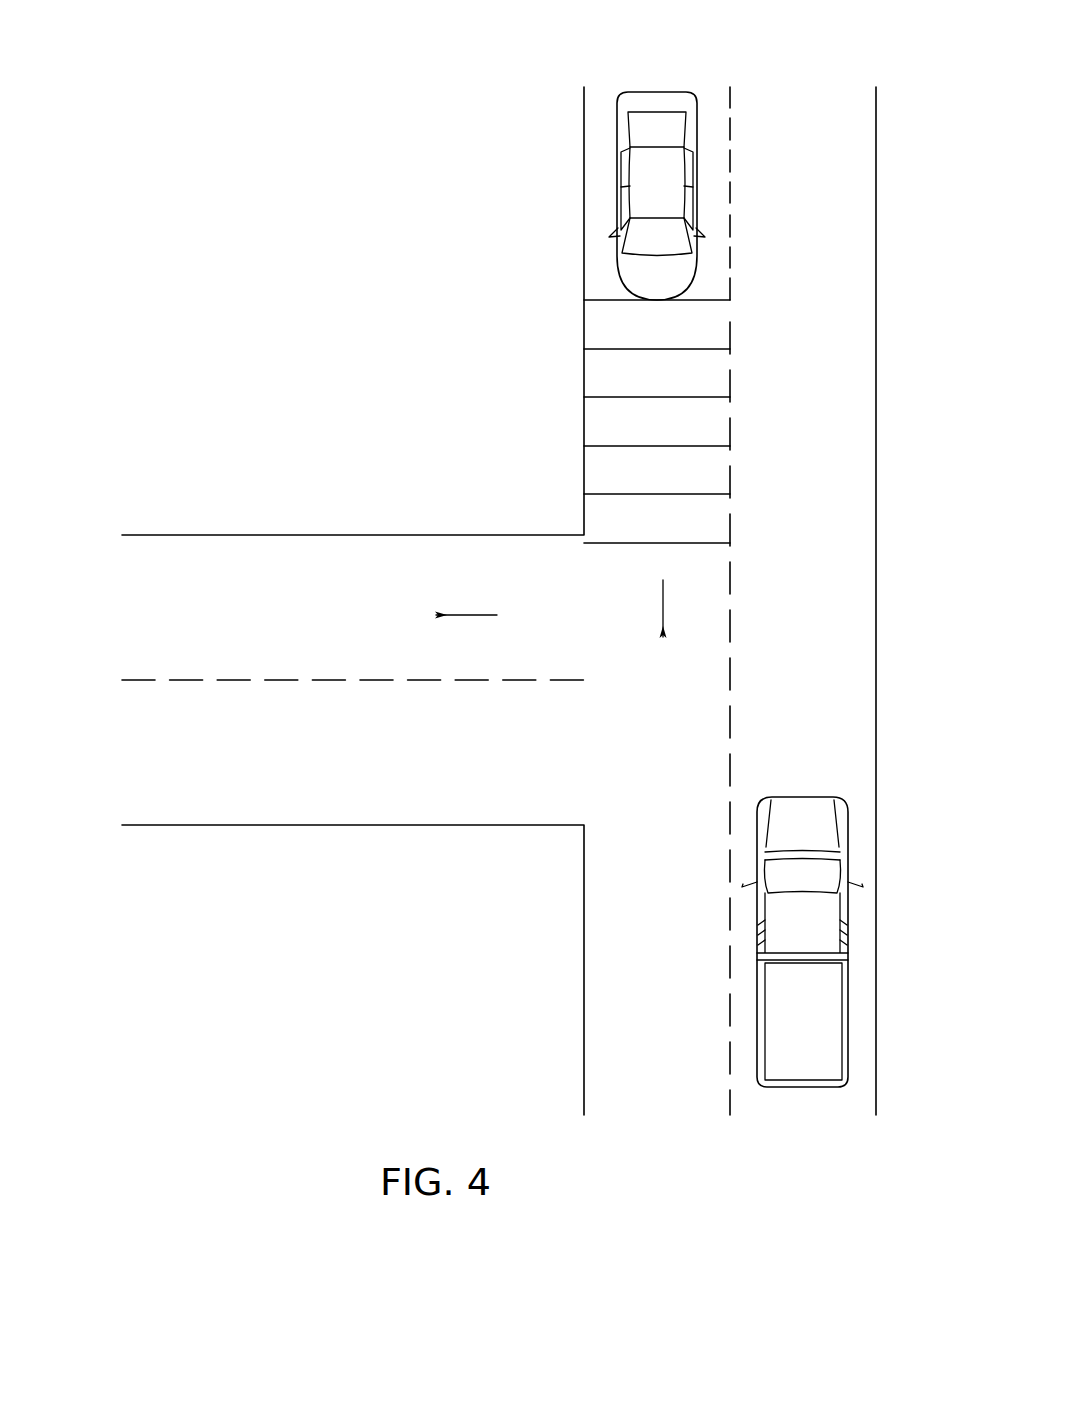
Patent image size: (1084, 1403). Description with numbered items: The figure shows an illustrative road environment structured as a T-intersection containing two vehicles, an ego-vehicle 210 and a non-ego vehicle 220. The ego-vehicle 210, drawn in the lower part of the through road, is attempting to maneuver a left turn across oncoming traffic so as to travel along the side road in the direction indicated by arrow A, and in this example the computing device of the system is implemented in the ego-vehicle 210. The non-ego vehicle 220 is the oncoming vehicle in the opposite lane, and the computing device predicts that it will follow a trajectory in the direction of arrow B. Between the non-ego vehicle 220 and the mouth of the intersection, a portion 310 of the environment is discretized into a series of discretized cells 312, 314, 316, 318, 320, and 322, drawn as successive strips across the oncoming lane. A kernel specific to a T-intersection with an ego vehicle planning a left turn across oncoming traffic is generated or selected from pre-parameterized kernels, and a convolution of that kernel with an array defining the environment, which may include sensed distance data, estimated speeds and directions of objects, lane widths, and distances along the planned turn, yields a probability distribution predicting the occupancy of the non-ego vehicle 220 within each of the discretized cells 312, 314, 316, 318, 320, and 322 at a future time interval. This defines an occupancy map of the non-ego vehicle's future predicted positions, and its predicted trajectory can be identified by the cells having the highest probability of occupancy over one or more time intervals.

The ego-vehicle 210 is at (797, 1087).
The non-ego vehicle 220 is at (657, 92).
The portion of the environment 310 is at (486, 375).
The discretized cell 312 is at (713, 293).
The discretized cell 314 is at (713, 341).
The discretized cell 316 is at (713, 389).
The discretized cell 318 is at (713, 438).
The discretized cell 320 is at (713, 486).
The discretized cell 322 is at (713, 535).